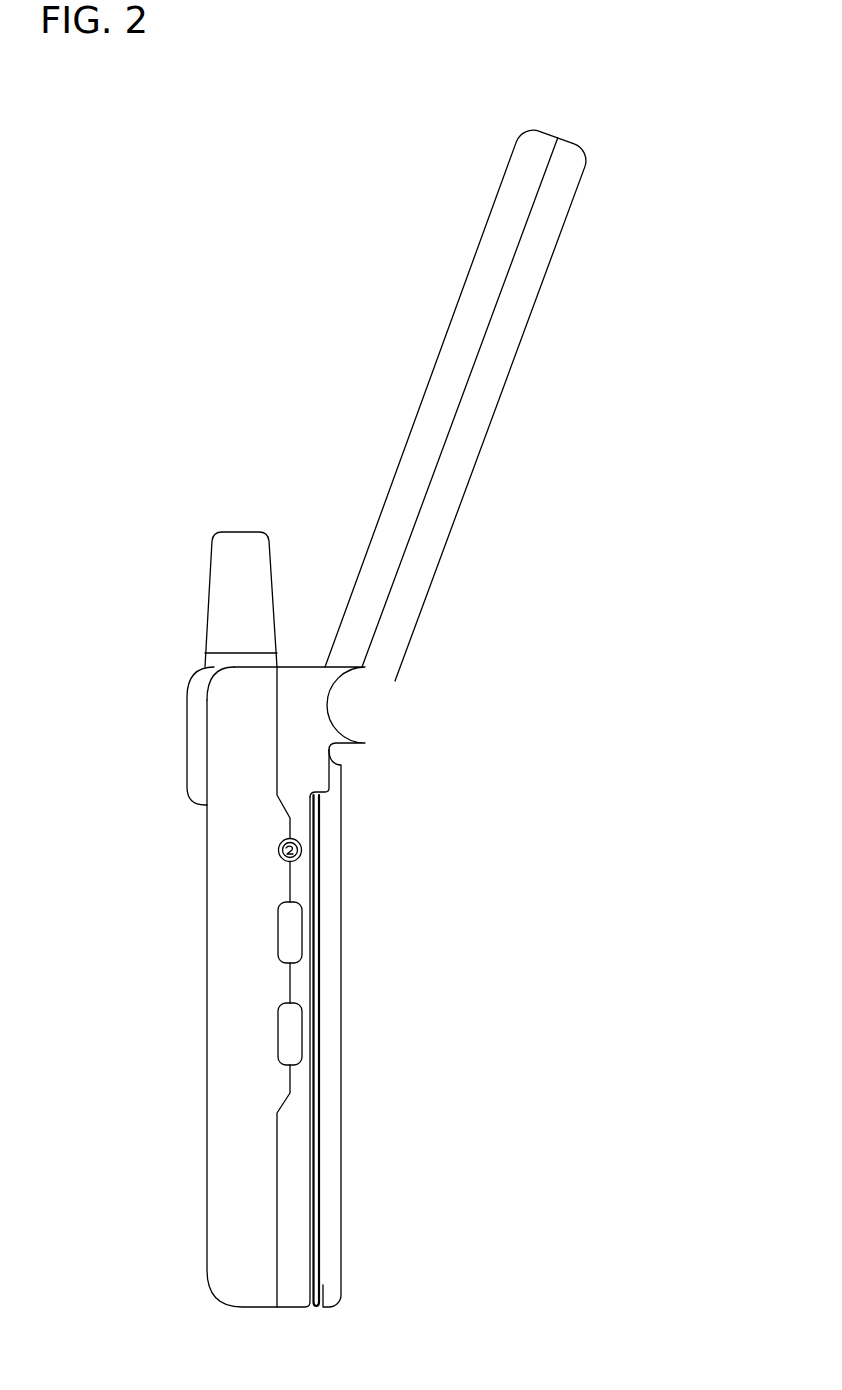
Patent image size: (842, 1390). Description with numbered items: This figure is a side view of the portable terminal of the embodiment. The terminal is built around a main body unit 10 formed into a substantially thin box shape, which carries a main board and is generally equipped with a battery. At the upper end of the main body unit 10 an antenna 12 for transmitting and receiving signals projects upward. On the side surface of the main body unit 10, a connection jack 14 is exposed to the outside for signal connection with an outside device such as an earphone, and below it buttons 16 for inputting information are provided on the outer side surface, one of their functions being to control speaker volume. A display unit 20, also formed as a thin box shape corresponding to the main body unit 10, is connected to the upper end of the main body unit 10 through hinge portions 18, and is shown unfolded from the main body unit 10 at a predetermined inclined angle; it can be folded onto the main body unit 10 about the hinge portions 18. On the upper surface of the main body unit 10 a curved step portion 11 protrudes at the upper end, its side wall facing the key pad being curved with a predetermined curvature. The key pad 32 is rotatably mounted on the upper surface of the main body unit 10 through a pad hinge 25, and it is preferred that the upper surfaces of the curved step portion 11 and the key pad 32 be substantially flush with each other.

The main body unit 10 is at (228, 1165).
The curved step portion 11 is at (321, 794).
The antenna 12 is at (228, 593).
The connection jack 14 is at (278, 851).
The buttons 16 is at (286, 931).
The hinge portions 18 is at (372, 708).
The display unit 20 is at (515, 360).
The pad hinge 25 is at (313, 988).
The key pad 32 is at (330, 1233).